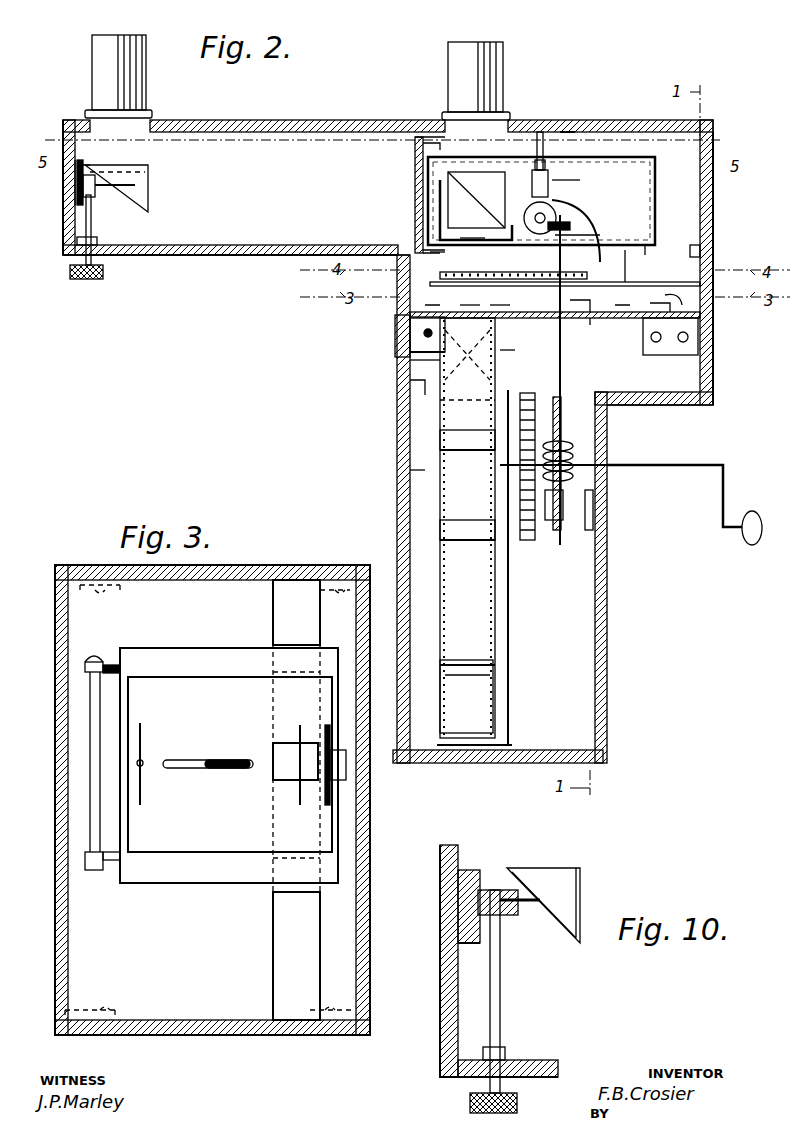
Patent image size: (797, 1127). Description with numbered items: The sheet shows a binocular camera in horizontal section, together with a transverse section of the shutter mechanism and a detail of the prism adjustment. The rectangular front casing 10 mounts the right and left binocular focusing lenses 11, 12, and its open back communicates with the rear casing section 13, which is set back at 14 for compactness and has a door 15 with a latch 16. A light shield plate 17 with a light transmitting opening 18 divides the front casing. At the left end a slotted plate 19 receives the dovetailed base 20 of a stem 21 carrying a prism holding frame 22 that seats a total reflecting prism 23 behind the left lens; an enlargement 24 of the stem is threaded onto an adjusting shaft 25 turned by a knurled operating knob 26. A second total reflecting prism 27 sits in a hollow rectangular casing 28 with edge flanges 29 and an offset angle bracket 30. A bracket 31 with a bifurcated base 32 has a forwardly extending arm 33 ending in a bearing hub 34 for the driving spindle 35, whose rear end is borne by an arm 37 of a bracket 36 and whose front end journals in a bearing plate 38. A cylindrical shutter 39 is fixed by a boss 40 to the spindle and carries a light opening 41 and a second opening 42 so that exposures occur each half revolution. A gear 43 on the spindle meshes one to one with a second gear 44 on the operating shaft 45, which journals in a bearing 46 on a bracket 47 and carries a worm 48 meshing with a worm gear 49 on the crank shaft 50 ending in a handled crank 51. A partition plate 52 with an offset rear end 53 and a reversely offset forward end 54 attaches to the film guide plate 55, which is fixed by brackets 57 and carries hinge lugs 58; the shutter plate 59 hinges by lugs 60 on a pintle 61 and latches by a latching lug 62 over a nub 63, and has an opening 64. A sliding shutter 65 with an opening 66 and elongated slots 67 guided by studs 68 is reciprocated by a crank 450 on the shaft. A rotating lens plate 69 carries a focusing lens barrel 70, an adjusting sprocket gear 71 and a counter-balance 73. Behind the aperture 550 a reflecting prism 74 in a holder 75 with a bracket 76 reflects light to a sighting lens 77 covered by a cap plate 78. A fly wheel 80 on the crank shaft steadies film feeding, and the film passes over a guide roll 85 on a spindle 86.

In FIG. 2, the rectangular front casing 10 is at (300, 128).
In FIG. 10, the rectangular front casing 10 is at (447, 922).
In FIG. 2, the right binocular focusing lens 11 is at (448, 92).
In FIG. 2, the left binocular focusing lens 12 is at (146, 84).
In FIG. 2, the rear casing section 13 is at (395, 290).
In FIG. 3, the rear casing section 13 is at (240, 568).
In FIG. 2, the set back 14 is at (668, 403).
In FIG. 2, the door 15 is at (407, 470).
In FIG. 2, the latch 16 is at (398, 240).
In FIG. 2, the light shield plate 17 is at (416, 148).
In FIG. 2, the light transmitting opening 18 is at (413, 186).
In FIG. 2, the plate 19 is at (80, 186).
In FIG. 10, the plate 19 is at (460, 890).
In FIG. 2, the base 20 is at (90, 165).
In FIG. 10, the base 20 is at (470, 920).
In FIG. 2, the stem 21 is at (95, 190).
In FIG. 10, the stem 21 is at (545, 905).
In FIG. 2, the prism holding frame 22 is at (130, 200).
In FIG. 2, the total reflecting prism 23 is at (149, 182).
In FIG. 2, the enlargement 24 is at (72, 196).
In FIG. 10, the enlargement 24 is at (506, 916).
In FIG. 2, the adjusting shaft 25 is at (91, 222).
In FIG. 10, the adjusting shaft 25 is at (502, 995).
In FIG. 2, the knurled operating knob 26 is at (84, 280).
In FIG. 10, the knurled operating knob 26 is at (468, 1102).
In FIG. 2, the second total reflecting prism 27 is at (470, 196).
In FIG. 2, the hollow rectangular casing 28 is at (472, 240).
In FIG. 2, the edge flanges 29 is at (445, 200).
In FIG. 2, the offset angle bracket 30 is at (442, 253).
In FIG. 2, the bracket 31 is at (648, 247).
In FIG. 2, the bifurcated base 32 is at (712, 251).
In FIG. 2, the forwardly extending arm 33 is at (602, 216).
In FIG. 2, the bearing hub 34 is at (549, 180).
In FIG. 2, the driving spindle 35 is at (533, 176).
In FIG. 2, the bracket 36 is at (560, 187).
In FIG. 2, the arm 37 is at (540, 235).
In FIG. 2, the bearing plate 38 is at (568, 130).
In FIG. 2, the cylindrical shutter 39 is at (605, 156).
In FIG. 2, the boss 40 is at (562, 162).
In FIG. 2, the light opening 41 is at (657, 196).
In FIG. 2, the second opening 42 is at (535, 152).
In FIG. 2, the gear 43 is at (575, 232).
In FIG. 2, the second gear 44 is at (570, 226).
In FIG. 2, the operating shaft 45 is at (562, 262).
In FIG. 3, the operating shaft 45 is at (203, 760).
In FIG. 2, the bearing 46 is at (556, 535).
In FIG. 2, the bracket 47 is at (593, 507).
In FIG. 2, the worm 48 is at (570, 443).
In FIG. 2, the worm gear 49 is at (562, 410).
In FIG. 2, the crank shaft 50 is at (620, 465).
In FIG. 2, the handled crank 51 is at (723, 495).
In FIG. 2, the partition plate 52 is at (510, 620).
In FIG. 2, the laterally offset rear end 53 is at (474, 702).
In FIG. 2, the reversely offset forward end 54 is at (520, 333).
In FIG. 2, the film guide plate 55 is at (600, 319).
In FIG. 2, the brackets 57 is at (660, 345).
In FIG. 3, the brackets 57 is at (90, 585).
In FIG. 2, the hinge lugs 58 is at (682, 300).
In FIG. 3, the hinge lugs 58 is at (92, 657).
In FIG. 2, the shutter plate 59 is at (432, 303).
In FIG. 3, the shutter plate 59 is at (180, 655).
In FIG. 2, the hinging lugs 60 is at (660, 305).
In FIG. 3, the hinging lugs 60 is at (110, 668).
In FIG. 3, the hinging pintle 61 is at (88, 740).
In FIG. 3, the latching lug 62 is at (330, 738).
In FIG. 3, the nub 63 is at (348, 768).
In FIG. 2, the opening 64 is at (470, 305).
In FIG. 3, the sliding shutter 65 is at (152, 829).
In FIG. 2, the opening 66 is at (500, 305).
In FIG. 3, the opening 66 is at (280, 778).
In FIG. 3, the elongated slots 67 is at (142, 748).
In FIG. 3, the guide studs 68 is at (142, 768).
In FIG. 2, the rotating lens plate 69 is at (580, 306).
In FIG. 2, the focusing lens barrel 70 is at (470, 272).
In FIG. 2, the adjusting sprocket gear 71 is at (640, 283).
In FIG. 2, the counter-balance 73 is at (626, 262).
In FIG. 2, the reflecting prism 74 is at (410, 358).
In FIG. 2, the holder 75 is at (410, 400).
In FIG. 2, the bracket 76 is at (410, 390).
In FIG. 2, the sighting lens 77 is at (395, 336).
In FIG. 2, the cap plate 78 is at (400, 351).
In FIG. 2, the fly wheel 80 is at (535, 535).
In FIG. 2, the guide roll 85 is at (485, 676).
In FIG. 2, the spindle 86 is at (498, 665).
In FIG. 3, the crank 450 is at (228, 760).
In FIG. 2, the aperture 550 is at (478, 340).